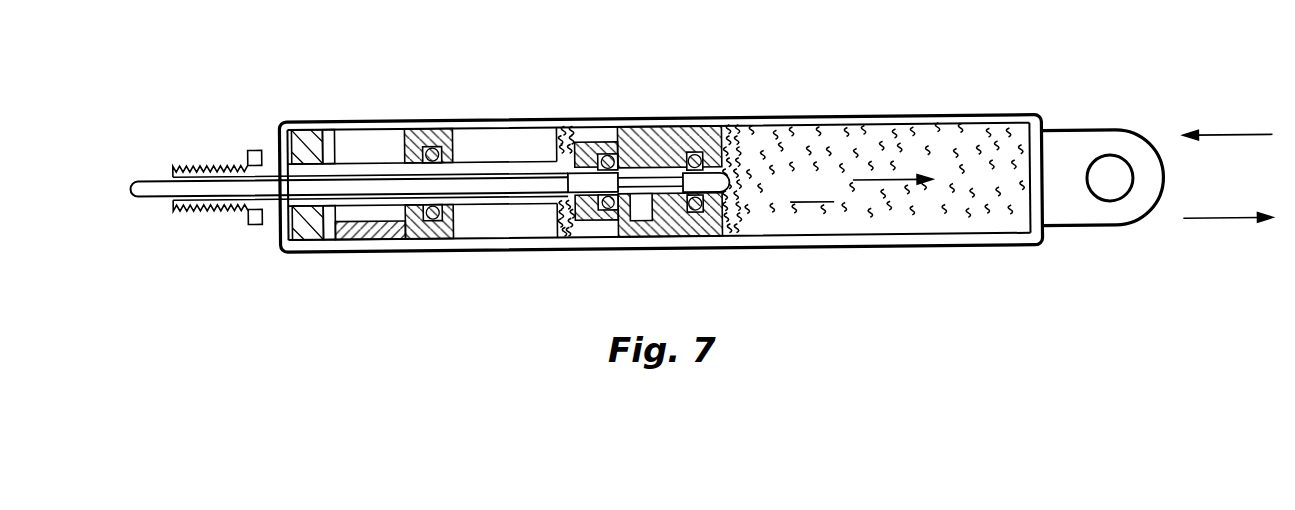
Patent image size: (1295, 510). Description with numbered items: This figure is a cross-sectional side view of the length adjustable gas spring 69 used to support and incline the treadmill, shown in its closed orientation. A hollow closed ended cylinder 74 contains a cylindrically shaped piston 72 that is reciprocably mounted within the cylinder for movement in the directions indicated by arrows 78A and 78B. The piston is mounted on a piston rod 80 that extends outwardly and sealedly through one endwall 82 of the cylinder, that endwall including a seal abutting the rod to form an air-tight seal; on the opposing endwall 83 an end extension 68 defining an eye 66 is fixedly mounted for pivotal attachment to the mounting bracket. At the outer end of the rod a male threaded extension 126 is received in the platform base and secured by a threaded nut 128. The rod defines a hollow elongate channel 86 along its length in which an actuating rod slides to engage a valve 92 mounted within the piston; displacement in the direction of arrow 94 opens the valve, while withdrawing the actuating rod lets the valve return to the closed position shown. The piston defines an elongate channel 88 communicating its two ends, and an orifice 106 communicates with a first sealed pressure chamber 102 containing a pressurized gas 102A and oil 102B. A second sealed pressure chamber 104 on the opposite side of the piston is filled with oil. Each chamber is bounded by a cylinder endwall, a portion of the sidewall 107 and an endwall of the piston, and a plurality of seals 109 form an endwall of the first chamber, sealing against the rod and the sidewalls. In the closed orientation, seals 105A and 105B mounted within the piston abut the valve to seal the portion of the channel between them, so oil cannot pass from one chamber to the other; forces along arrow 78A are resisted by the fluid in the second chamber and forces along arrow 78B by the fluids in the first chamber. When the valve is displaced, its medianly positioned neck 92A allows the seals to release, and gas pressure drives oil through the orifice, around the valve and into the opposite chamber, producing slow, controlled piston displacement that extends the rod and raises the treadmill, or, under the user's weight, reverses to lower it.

The eye 66 is at (1115, 176).
The end extension 68 is at (1138, 211).
The gas spring 69 is at (442, 140).
The piston 72 is at (673, 146).
The cylinder 74 is at (950, 146).
The arrow 78A is at (1217, 229).
The arrow 78B is at (1237, 144).
The piston rod 80 is at (150, 176).
The endwall 82 is at (283, 135).
The opposing endwall 83 is at (1043, 130).
The hollow elongate channel 86 is at (214, 163).
The elongate channel 88 is at (683, 214).
The valve 92 is at (738, 182).
The neck 92A is at (650, 212).
The arrow 94 is at (887, 188).
The first sealed pressure chamber 102 is at (498, 224).
The pressurized gas 102A is at (517, 143).
The oil 102B is at (573, 141).
The second sealed pressure chamber 104 is at (813, 190).
The seal 105A is at (632, 142).
The seal 105B is at (713, 142).
The orifice 106 is at (376, 130).
The sidewall 107 is at (870, 122).
The seals 109 is at (307, 141).
The male threaded extension 126 is at (196, 212).
The threaded nut 128 is at (255, 225).